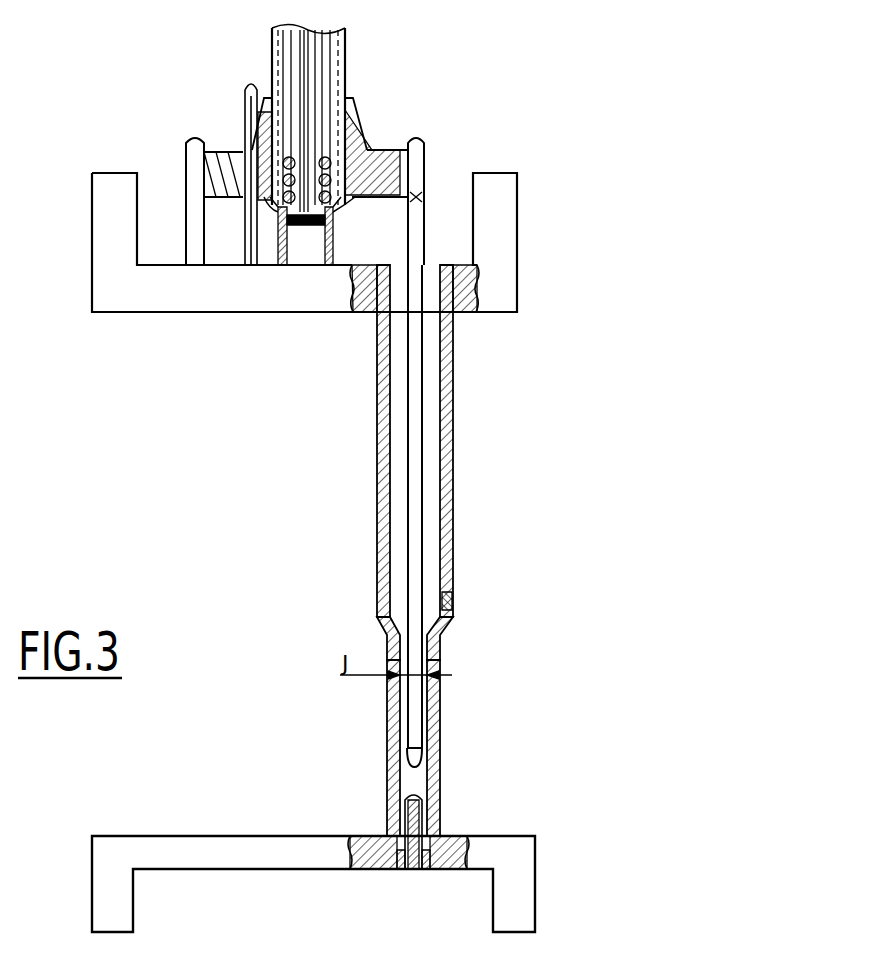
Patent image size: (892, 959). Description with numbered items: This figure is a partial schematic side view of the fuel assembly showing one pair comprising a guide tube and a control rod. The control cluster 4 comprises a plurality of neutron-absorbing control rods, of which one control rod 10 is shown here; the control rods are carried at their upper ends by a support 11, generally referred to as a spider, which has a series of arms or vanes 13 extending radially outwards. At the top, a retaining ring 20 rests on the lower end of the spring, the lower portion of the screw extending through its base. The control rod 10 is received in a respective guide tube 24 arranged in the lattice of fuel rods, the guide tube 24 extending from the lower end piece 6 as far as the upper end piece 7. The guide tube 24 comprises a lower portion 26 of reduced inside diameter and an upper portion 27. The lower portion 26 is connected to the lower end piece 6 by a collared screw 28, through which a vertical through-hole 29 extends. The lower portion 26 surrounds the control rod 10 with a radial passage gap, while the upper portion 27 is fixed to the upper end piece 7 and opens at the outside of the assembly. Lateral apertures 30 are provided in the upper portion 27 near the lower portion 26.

The control cluster 4 is at (378, 68).
The support 11 is at (270, 65).
The arms or vanes 13 is at (355, 150).
The retaining ring 20 is at (303, 245).
The upper end piece 7 is at (487, 312).
The upper portion 27 is at (449, 505).
The control rod 10 is at (412, 538).
The lateral apertures 30 is at (452, 592).
The guide tube 24 is at (455, 648).
The lower portion 26 is at (439, 752).
The lower end piece 6 is at (488, 840).
The collared screw 28 is at (397, 869).
The vertical through-hole 29 is at (408, 870).